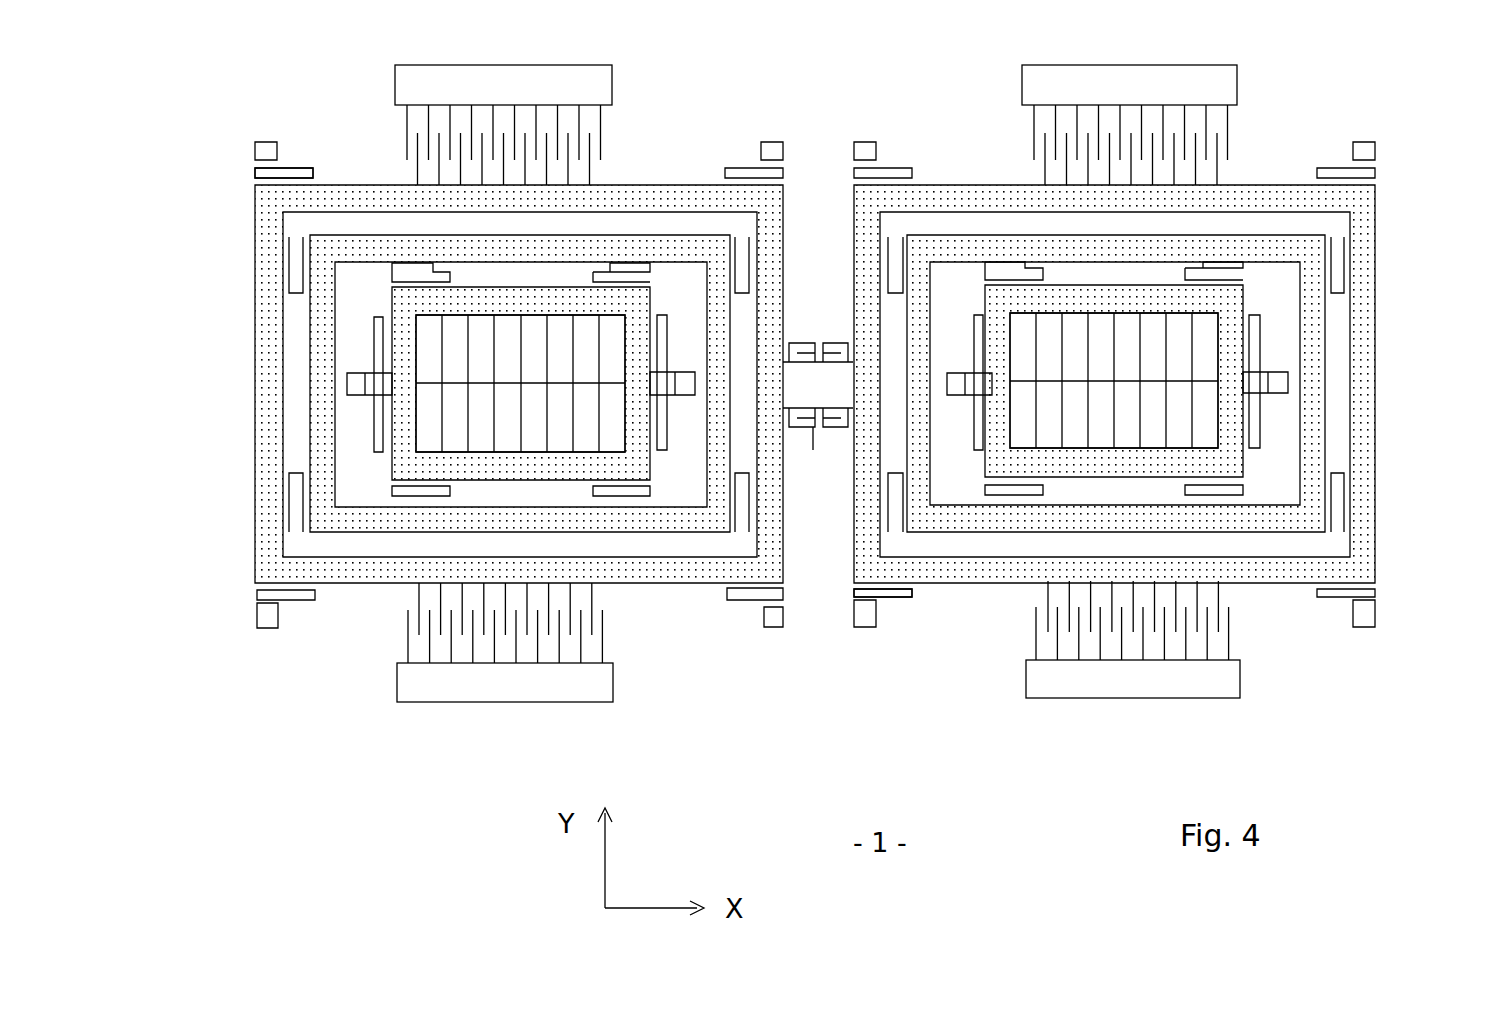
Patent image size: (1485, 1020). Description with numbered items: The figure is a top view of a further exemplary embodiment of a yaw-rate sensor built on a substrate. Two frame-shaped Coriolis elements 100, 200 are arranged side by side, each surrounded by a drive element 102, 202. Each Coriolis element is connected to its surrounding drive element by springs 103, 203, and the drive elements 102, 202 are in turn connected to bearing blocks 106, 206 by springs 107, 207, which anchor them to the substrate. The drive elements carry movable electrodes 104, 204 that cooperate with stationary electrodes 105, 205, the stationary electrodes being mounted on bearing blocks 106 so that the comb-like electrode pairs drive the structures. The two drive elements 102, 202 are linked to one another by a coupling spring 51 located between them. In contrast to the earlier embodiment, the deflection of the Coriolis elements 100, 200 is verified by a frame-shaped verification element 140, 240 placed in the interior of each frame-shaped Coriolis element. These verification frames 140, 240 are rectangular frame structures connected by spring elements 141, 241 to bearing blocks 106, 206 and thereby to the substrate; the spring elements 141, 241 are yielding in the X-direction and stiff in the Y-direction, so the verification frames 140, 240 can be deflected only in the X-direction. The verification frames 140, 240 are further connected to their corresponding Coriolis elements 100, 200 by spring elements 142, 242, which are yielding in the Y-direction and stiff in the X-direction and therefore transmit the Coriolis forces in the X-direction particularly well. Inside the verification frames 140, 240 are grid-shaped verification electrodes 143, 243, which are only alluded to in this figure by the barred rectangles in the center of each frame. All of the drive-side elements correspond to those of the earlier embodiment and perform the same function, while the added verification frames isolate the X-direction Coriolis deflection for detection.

The coupling spring 51 is at (813, 450).
The Coriolis element 100 is at (785, 185).
The drive element 102 is at (695, 190).
The spring 103 is at (292, 505).
The movable electrode 104 is at (590, 607).
The stationary electrode 105 is at (602, 652).
The bearing block 106 is at (258, 618).
The spring 107 is at (297, 600).
The verification element 140 is at (650, 303).
The spring element 141 is at (375, 358).
The spring element 142 is at (433, 268).
The verification electrode 143 is at (525, 340).
The Coriolis element 200 is at (1318, 457).
The drive element 202 is at (1378, 550).
The spring 203 is at (1344, 500).
The movable electrode 204 is at (1217, 588).
The stationary electrode 205 is at (1058, 642).
The bearing block 206 is at (950, 372).
The spring 207 is at (902, 598).
The verification element 240 is at (1237, 330).
The spring element 241 is at (972, 320).
The spring element 242 is at (1010, 268).
The verification electrode 243 is at (1120, 425).